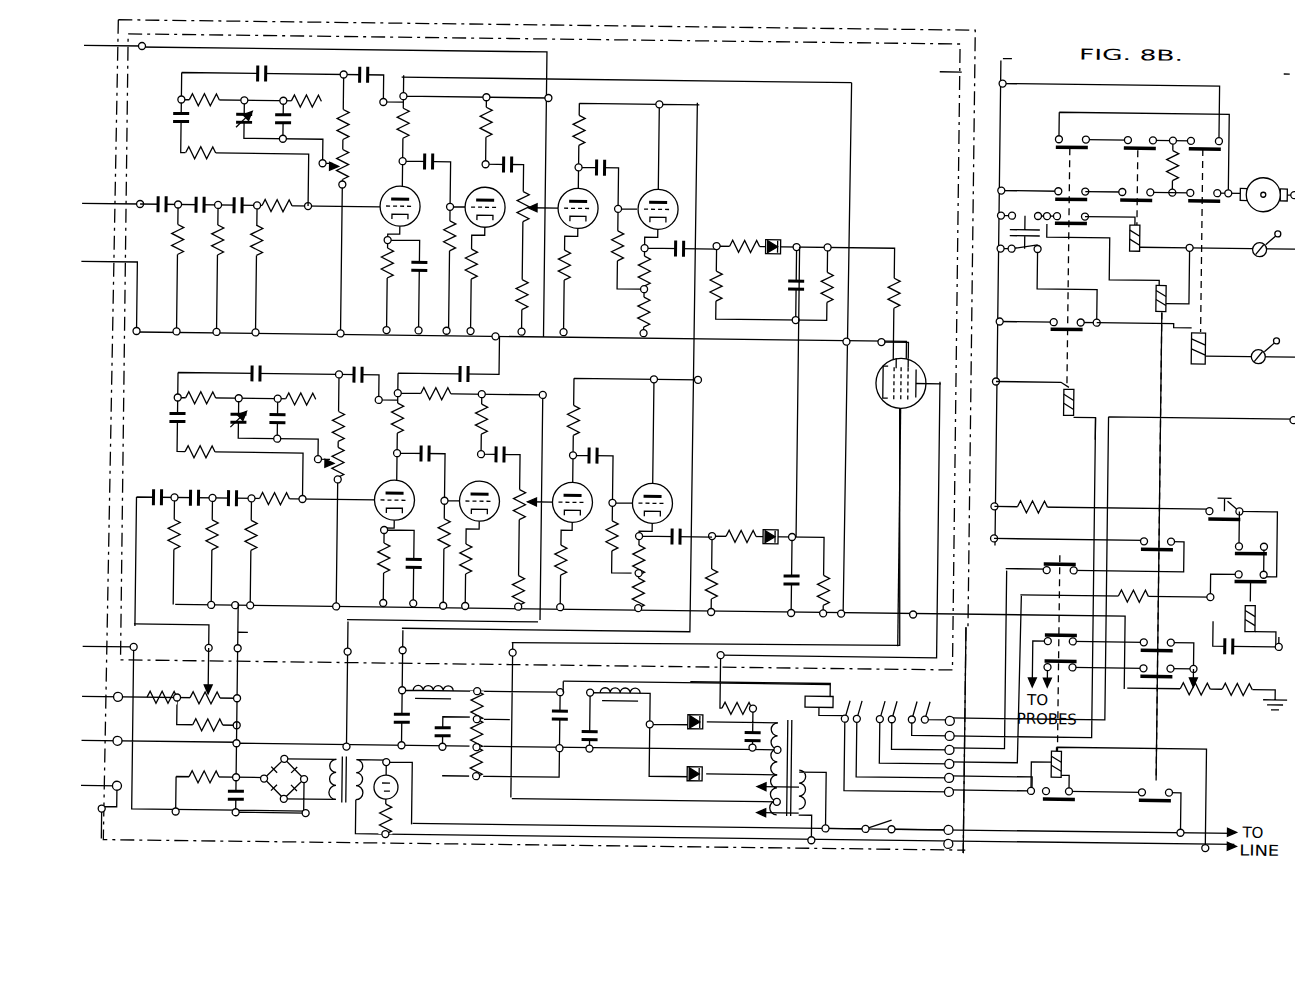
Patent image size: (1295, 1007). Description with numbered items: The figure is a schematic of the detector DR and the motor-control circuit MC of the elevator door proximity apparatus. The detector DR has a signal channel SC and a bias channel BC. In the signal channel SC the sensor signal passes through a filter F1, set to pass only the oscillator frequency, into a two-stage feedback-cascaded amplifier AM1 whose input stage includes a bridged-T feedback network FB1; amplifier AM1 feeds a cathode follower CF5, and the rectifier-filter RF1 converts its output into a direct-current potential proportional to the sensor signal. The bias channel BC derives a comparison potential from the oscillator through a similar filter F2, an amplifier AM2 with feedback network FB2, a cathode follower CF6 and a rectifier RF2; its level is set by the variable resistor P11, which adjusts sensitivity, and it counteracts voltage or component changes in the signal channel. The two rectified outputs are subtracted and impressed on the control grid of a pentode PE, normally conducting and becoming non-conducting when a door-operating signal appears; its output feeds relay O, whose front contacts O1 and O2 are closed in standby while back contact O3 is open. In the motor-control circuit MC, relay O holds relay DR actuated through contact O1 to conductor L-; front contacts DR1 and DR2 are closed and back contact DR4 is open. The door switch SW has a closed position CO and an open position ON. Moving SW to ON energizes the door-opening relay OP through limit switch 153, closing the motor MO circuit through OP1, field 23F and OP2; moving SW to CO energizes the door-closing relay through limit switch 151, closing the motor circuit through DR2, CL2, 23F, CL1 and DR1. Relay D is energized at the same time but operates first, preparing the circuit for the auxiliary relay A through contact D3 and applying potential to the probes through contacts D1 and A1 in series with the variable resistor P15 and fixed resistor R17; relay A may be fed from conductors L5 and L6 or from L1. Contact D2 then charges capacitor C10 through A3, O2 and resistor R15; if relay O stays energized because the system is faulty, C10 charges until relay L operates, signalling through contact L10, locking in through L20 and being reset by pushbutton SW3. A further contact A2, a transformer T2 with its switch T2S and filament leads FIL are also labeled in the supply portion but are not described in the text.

The filter F1 is at (172, 192).
The bridged T-feedback network FB1 is at (237, 95).
The two stage amplifier AM1 is at (440, 72).
The cathode follower CF5 is at (677, 185).
The rectifier-filter RF1 is at (750, 235).
The conductor L1 is at (98, 264).
The detector DR is at (1062, 396).
The filter F2 is at (166, 477).
The bridged T-feedback network FB2 is at (243, 393).
The amplifier AM2 is at (424, 361).
The signal channel SC is at (632, 477).
The cathode follower CF6 is at (675, 468).
The rectifier filter RF2 is at (762, 515).
The bias channel BC is at (610, 633).
The pentode PE is at (919, 370).
The conductor L- is at (1278, 71).
The front contact of relay DR DR1 is at (1091, 132).
The contact of relay CL CL1 is at (1157, 133).
The contact of relay OP OP1 is at (1202, 134).
The field 23F is at (1168, 180).
The front contact of relay DR DR2 is at (1057, 190).
The contact of relay CL CL2 is at (1145, 190).
The contact of relay OP OP2 is at (1210, 206).
The door control motor MO is at (1276, 163).
The closed position CO is at (1022, 214).
The switch SW is at (1046, 283).
The open position ON is at (1018, 269).
The relay D is at (1156, 298).
The limit switch 151 is at (1261, 258).
The back contact of relay DR DR4 is at (1068, 328).
The relay OP is at (1212, 336).
The limit switch 153 is at (1261, 365).
The motor-control circuit MC is at (1227, 451).
The pushbutton SW3 is at (1246, 509).
The contact of relay D D2 is at (1156, 540).
The contact of relay A A3 is at (1044, 563).
The contact of relay L L10 is at (1253, 541).
The contact of relay L L20 is at (1236, 570).
The relay L is at (1260, 613).
The resistor R15 is at (1120, 594).
The front contact of relay D D1 is at (1162, 666).
The capacitor C10 is at (1240, 653).
The back contact of relay A A1 is at (1086, 661).
The variable resistor P15 is at (1169, 694).
The fixed resistor R17 is at (1248, 702).
The auxiliary relay A is at (1064, 758).
The relay A contact 2 A2 is at (1042, 809).
The contact of relay D D3 is at (1149, 791).
The supply conductor L5 is at (1098, 828).
The supply conductor L6 is at (1139, 828).
The variable resistor P11 is at (206, 676).
The relay O is at (803, 699).
The back contact of relay O O3 is at (892, 735).
The front contact of relay O O2 is at (907, 721).
The front contact of relay O O1 is at (929, 707).
The transformer T2 is at (830, 755).
The filament supply FIL is at (732, 801).
The transformer switch T2S is at (826, 797).